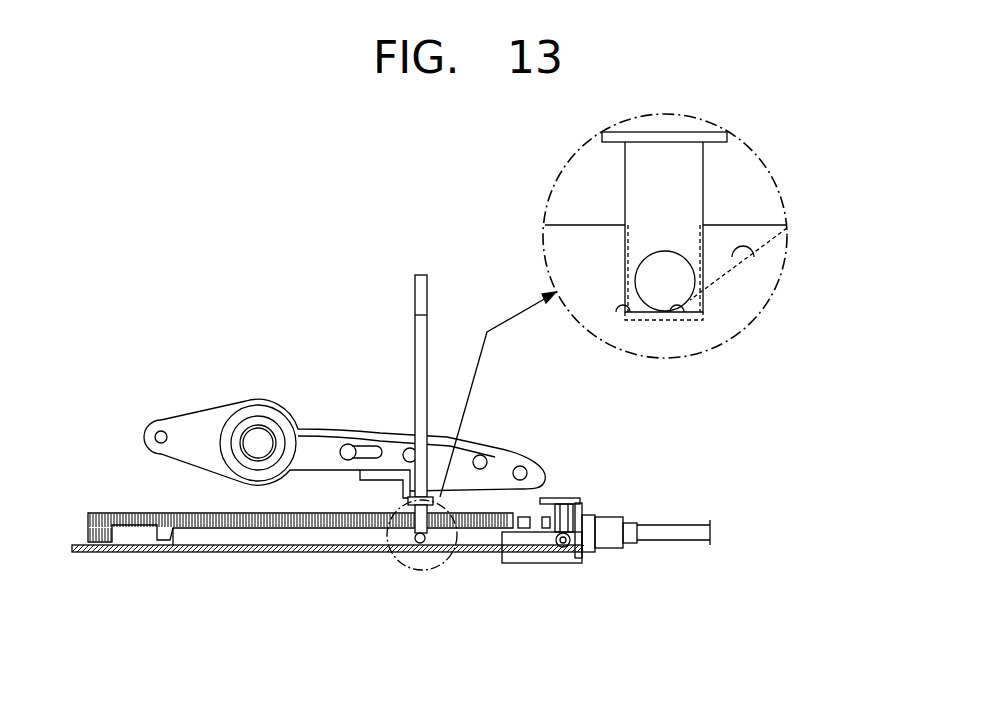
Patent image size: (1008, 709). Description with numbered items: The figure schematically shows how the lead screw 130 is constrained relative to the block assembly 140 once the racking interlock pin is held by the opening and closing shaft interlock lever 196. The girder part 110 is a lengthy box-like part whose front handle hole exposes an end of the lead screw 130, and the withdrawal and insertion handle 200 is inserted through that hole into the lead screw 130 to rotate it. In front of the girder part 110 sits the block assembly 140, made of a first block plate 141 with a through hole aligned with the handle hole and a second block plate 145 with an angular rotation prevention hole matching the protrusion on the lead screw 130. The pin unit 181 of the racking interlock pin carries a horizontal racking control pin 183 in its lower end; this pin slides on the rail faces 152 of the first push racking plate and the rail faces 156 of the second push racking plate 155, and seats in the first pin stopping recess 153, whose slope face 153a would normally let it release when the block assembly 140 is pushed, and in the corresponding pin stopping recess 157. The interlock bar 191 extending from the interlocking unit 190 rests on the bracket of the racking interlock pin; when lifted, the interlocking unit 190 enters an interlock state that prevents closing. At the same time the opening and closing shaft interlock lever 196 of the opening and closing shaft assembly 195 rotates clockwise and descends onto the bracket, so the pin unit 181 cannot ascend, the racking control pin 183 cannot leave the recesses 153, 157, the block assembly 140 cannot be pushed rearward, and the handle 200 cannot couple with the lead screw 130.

The girder part 110 is at (533, 563).
The lead screw 130 is at (122, 515).
The block assembly 140 is at (602, 436).
The first block plate 141 is at (580, 507).
The second block plate 145 is at (557, 512).
The rail faces 152 is at (787, 228).
The first pin stopping recess 153 is at (690, 315).
The slope face 153a is at (755, 255).
The second push racking plate 155 is at (298, 555).
The rail faces 156 is at (235, 537).
The pin stopping recess 157 is at (622, 300).
The pin unit 181 is at (418, 520).
The racking control pin 183 is at (420, 540).
The interlocking unit 190 is at (212, 385).
The interlock bar 191 is at (418, 367).
The opening and closing shaft assembly 195 is at (256, 432).
The opening and closing shaft interlock lever 196 is at (305, 440).
The withdrawal and insertion handle 200 is at (610, 545).